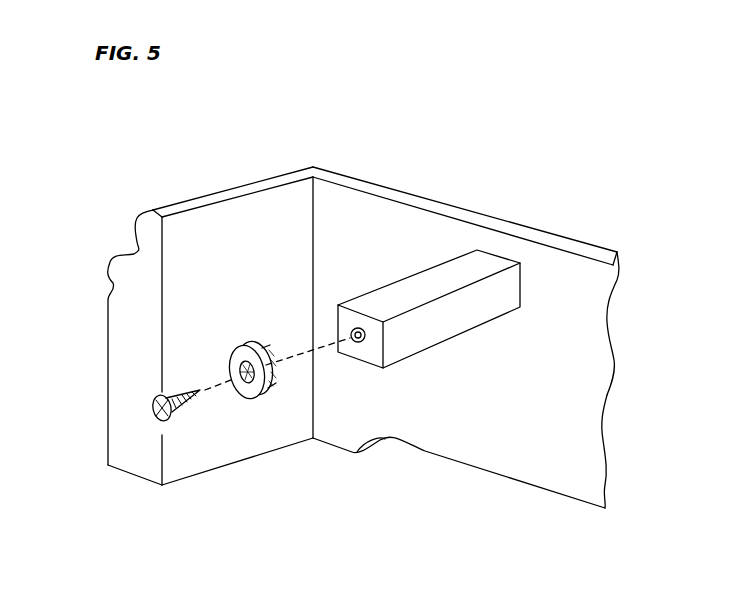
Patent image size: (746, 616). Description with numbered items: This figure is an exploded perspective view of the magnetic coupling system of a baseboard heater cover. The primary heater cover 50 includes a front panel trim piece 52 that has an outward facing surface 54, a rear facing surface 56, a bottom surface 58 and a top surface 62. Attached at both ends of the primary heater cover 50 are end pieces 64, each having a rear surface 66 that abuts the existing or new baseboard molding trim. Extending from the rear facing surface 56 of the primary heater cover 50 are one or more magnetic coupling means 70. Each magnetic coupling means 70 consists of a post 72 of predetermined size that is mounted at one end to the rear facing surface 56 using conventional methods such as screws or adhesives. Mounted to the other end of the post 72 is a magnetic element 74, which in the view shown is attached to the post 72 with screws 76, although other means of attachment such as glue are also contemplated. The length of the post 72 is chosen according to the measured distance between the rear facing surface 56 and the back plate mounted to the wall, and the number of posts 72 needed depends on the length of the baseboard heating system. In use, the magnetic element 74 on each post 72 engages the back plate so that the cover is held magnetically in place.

The primary heater cover 50 is at (386, 182).
The front panel trim piece 52 is at (615, 372).
The outward facing surface 54 is at (480, 213).
The rear facing surface 56 is at (555, 445).
The bottom surface 58 is at (128, 478).
The top surface 62 is at (573, 245).
The end piece 64 is at (183, 199).
The rear surface 66 is at (133, 322).
The magnetic coupling means 70 is at (256, 297).
The post 72 is at (407, 362).
The magnetic element 74 is at (257, 400).
The screw 76 is at (177, 413).